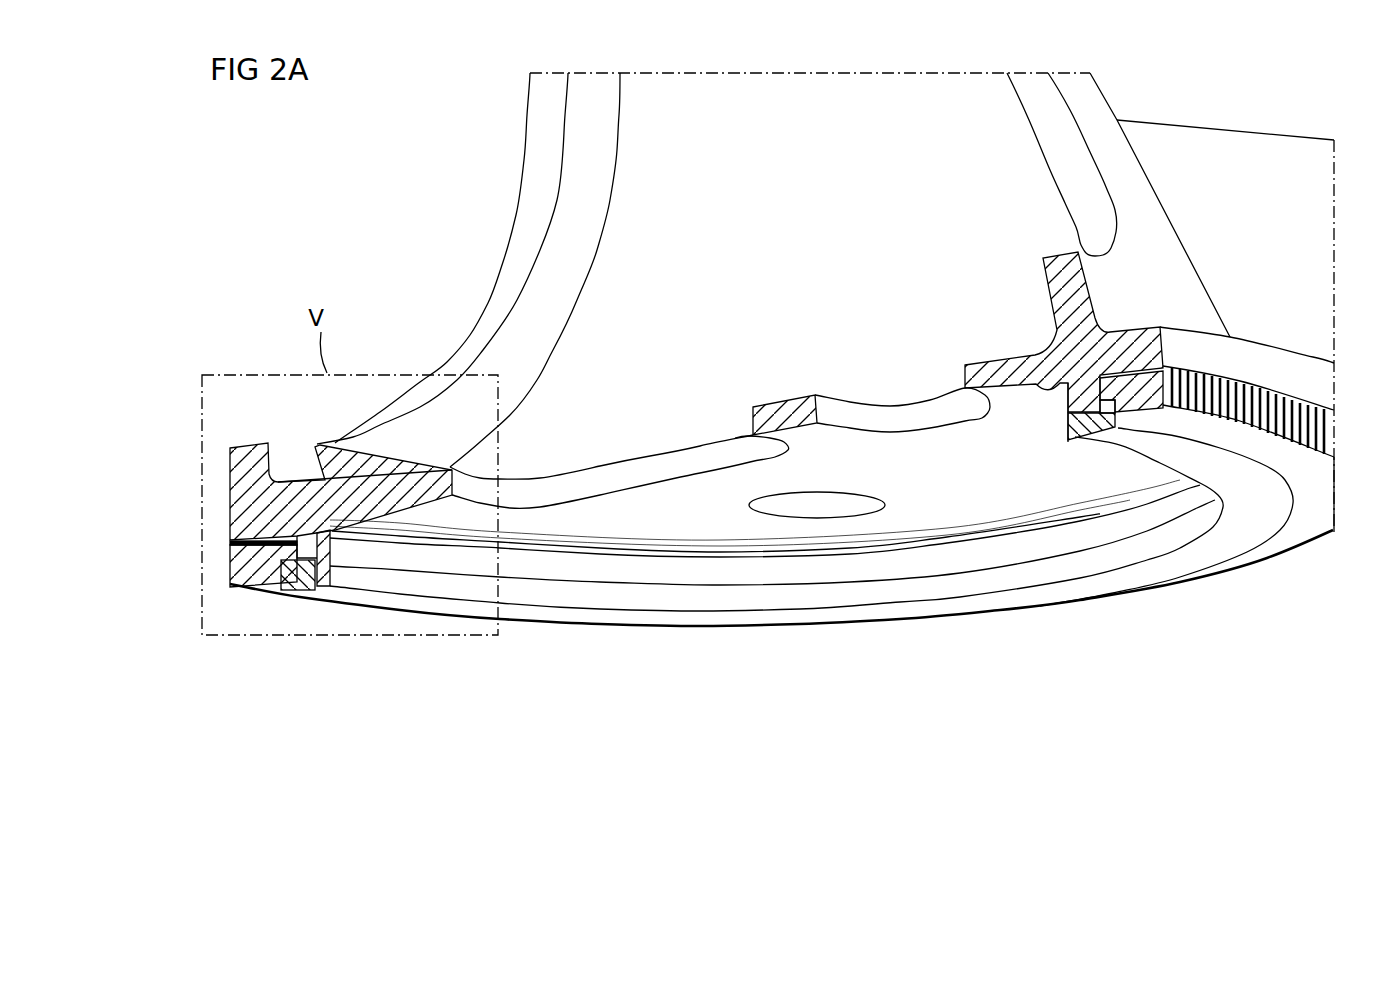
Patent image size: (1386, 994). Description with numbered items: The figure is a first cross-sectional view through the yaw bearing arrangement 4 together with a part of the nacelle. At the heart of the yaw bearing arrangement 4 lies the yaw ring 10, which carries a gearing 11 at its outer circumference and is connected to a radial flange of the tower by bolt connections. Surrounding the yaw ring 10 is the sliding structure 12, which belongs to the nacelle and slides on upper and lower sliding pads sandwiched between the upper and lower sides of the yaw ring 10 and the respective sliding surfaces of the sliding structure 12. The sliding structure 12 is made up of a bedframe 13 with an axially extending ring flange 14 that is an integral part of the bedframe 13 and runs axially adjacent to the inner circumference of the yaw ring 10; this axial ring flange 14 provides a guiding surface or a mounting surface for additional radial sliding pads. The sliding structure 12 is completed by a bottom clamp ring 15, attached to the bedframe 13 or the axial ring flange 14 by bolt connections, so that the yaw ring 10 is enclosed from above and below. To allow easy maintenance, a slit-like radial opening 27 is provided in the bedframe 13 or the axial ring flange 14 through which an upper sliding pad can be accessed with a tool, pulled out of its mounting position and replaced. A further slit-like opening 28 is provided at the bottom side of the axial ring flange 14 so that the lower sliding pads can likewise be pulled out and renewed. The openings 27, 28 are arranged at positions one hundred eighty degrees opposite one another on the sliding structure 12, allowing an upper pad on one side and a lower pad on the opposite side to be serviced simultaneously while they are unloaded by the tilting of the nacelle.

The yaw bearing arrangement 4 is at (1106, 628).
The yaw ring 10 is at (1300, 527).
The gearing 11 is at (1280, 390).
The sliding structure 12 is at (1067, 444).
The bedframe 13 is at (1000, 368).
The axial ring flange 14 is at (343, 544).
The bottom clamp ring 15 is at (288, 588).
The radial opening 27 is at (1063, 385).
The slit-like opening 28 is at (318, 588).